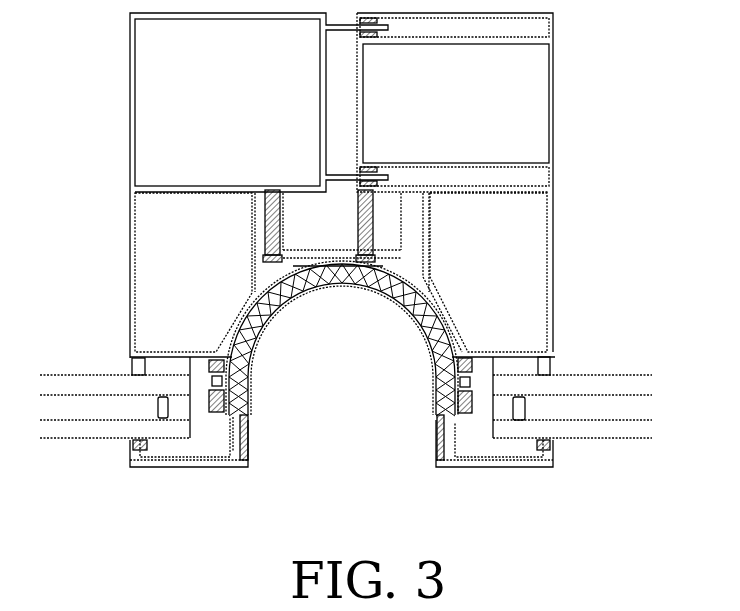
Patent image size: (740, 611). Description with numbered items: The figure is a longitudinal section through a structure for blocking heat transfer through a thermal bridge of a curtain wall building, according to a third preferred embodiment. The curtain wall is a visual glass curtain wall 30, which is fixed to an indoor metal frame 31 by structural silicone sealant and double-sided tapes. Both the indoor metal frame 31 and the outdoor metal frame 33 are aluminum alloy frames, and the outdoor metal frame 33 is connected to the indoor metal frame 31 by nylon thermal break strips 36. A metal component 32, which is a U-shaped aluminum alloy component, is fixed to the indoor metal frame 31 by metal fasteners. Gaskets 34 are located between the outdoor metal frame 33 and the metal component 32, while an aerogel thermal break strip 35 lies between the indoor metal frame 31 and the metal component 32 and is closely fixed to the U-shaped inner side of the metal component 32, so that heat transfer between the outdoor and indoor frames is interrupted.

The visual glass curtain wall 30 is at (73, 425).
The indoor metal frame 31 is at (340, 107).
The metal component 32 is at (298, 292).
The outdoor metal frame 33 is at (170, 460).
The gaskets 34 is at (242, 453).
The aerogel thermal break strip 35 is at (417, 320).
The nylon thermal break strips 36 is at (222, 396).